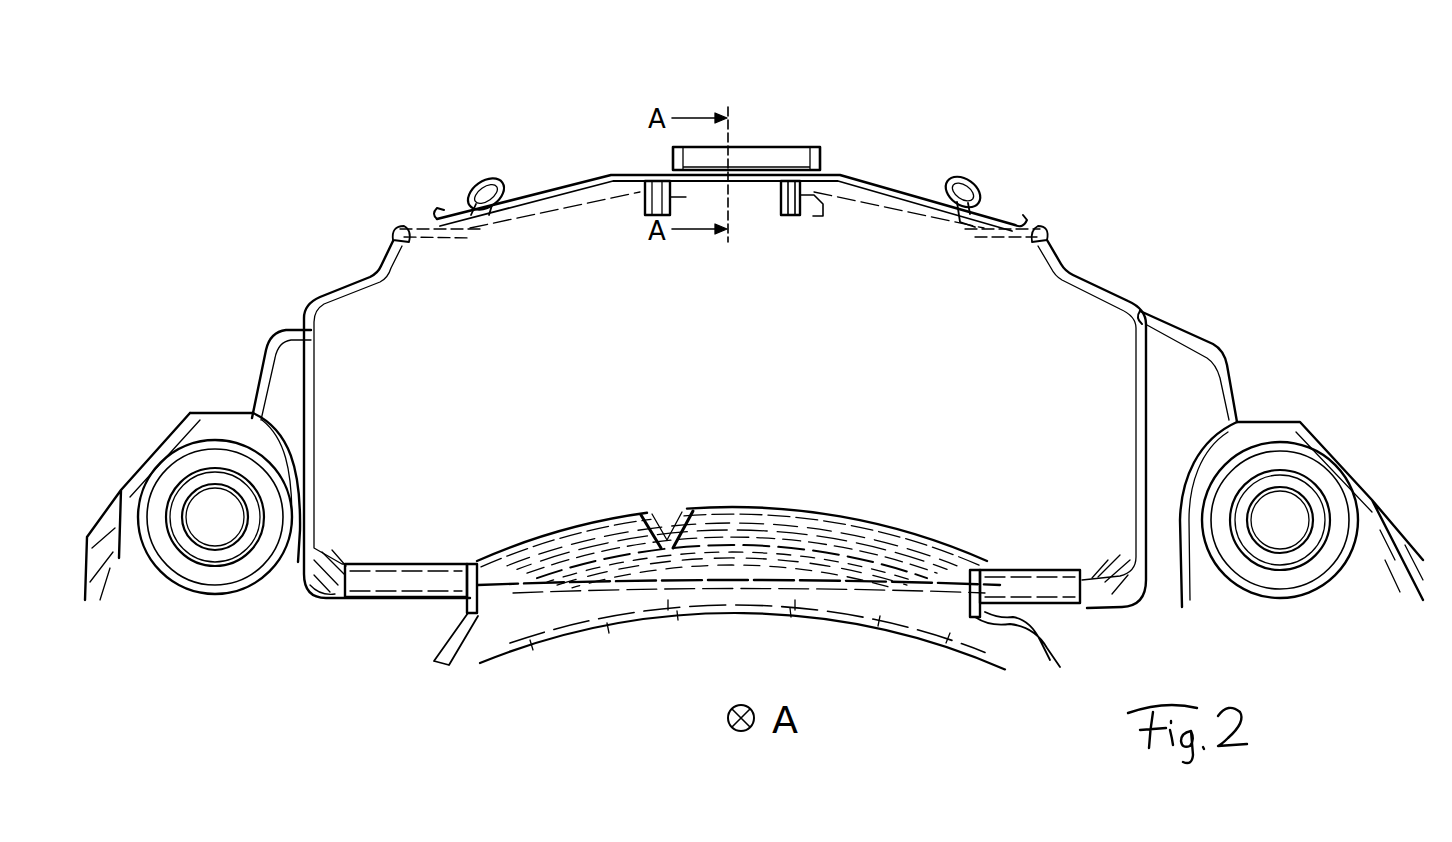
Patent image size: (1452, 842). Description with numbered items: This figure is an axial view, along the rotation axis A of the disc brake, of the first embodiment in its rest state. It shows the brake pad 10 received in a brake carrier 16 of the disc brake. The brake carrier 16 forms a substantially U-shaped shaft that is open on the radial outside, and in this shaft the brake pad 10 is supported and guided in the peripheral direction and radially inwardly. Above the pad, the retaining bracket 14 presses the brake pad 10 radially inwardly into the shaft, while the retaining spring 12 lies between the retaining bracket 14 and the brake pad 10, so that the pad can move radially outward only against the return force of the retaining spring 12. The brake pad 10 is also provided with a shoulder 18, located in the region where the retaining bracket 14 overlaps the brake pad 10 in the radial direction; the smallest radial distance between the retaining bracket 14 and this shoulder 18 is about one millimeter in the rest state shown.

The brake pad 10 is at (1080, 271).
The retaining spring 12 is at (857, 174).
The retaining bracket 14 is at (760, 147).
The brake carrier 16 is at (1186, 324).
The shoulder 18 is at (645, 193).